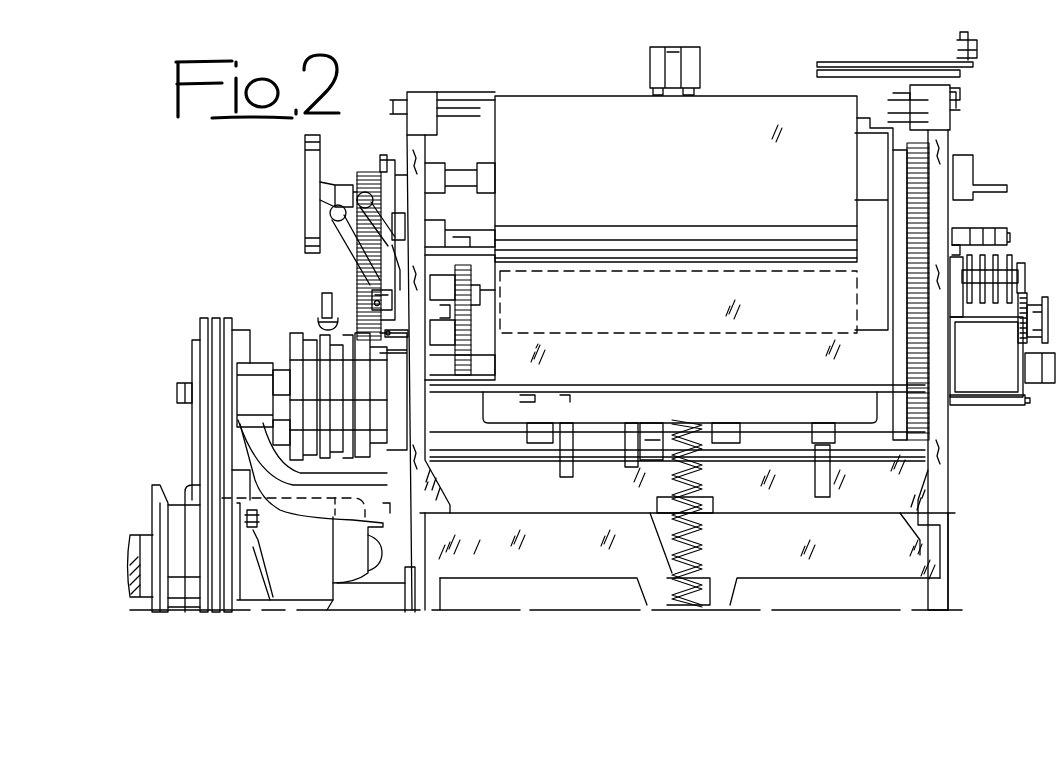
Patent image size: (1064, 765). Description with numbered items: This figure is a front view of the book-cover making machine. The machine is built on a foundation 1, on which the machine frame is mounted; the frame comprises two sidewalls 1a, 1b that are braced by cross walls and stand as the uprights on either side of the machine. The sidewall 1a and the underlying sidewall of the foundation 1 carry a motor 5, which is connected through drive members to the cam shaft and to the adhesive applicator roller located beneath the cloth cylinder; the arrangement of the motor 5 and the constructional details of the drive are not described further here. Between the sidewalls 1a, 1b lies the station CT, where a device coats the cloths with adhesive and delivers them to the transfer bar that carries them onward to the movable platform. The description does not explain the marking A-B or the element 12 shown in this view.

The section line indicator A-B is at (674, 47).
The station CT is at (762, 89).
The gear train with hand lever 12 is at (357, 274).
The sidewall 1a is at (422, 416).
The sidewall 1b is at (948, 470).
The motor 5 is at (358, 534).
The foundation 1 is at (520, 565).